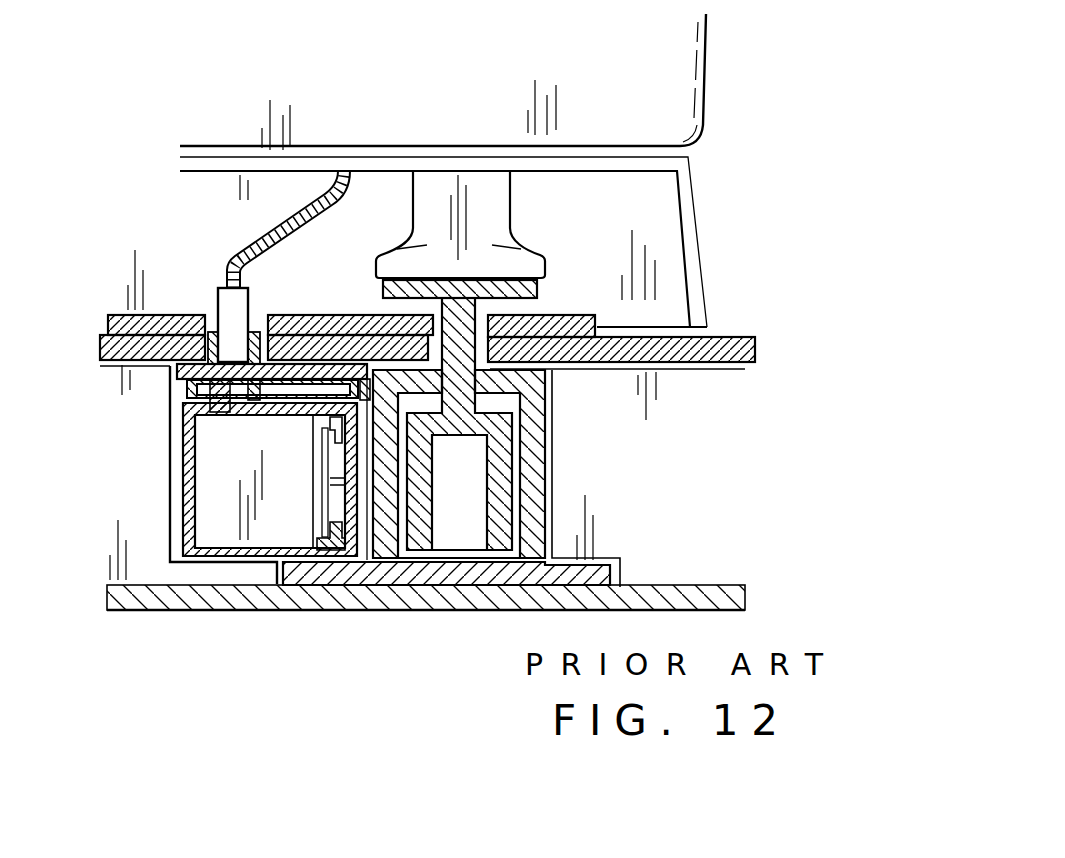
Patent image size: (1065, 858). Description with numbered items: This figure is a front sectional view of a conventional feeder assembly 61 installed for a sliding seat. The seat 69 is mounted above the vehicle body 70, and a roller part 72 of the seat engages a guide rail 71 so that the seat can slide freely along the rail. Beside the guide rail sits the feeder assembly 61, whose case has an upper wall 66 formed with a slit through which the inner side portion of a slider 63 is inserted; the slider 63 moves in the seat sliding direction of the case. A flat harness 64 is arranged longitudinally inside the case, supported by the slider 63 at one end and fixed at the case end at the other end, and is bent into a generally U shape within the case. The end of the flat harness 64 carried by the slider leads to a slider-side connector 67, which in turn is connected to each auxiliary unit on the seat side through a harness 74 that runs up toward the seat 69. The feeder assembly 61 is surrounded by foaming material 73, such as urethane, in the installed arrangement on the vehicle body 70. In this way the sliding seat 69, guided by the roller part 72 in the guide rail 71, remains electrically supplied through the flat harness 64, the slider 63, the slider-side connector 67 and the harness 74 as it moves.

The feeder assembly 61 is at (240, 568).
The slider 63 is at (313, 370).
The flat harness 64 is at (333, 477).
The upper wall 66 is at (253, 417).
The slider-side connector 67 is at (256, 330).
The seat 69 is at (707, 90).
The vehicle body 70 is at (680, 585).
The guide rail 71 is at (533, 467).
The roller part 72 is at (432, 520).
The foaming material 73 is at (148, 428).
The harness 74 is at (290, 223).